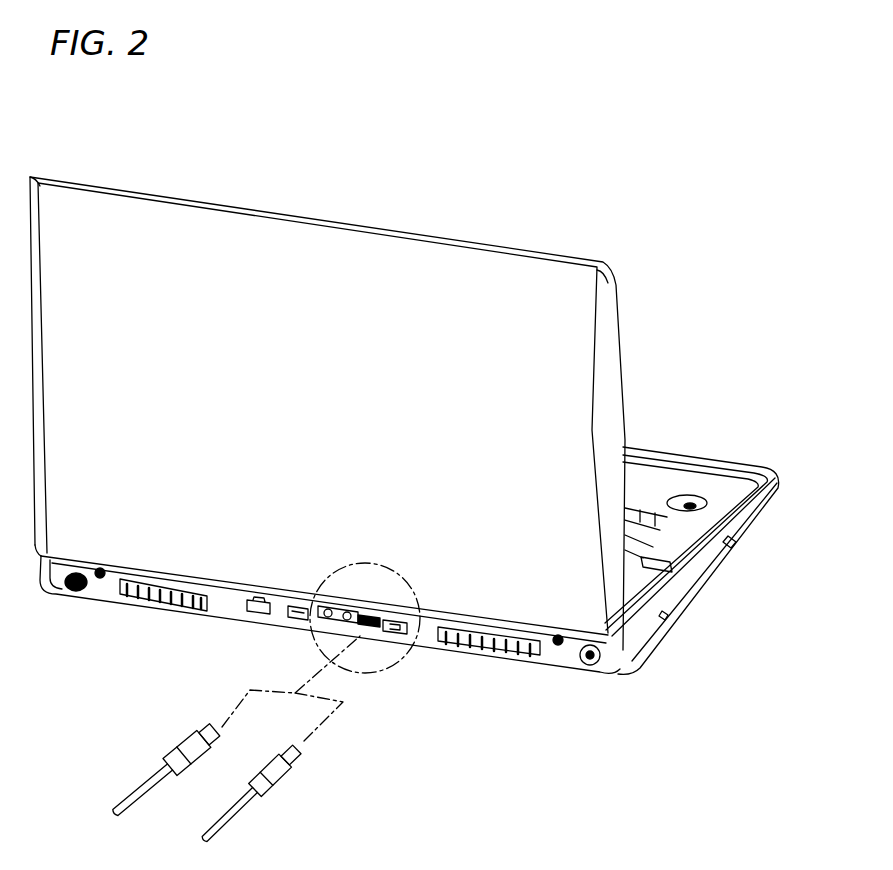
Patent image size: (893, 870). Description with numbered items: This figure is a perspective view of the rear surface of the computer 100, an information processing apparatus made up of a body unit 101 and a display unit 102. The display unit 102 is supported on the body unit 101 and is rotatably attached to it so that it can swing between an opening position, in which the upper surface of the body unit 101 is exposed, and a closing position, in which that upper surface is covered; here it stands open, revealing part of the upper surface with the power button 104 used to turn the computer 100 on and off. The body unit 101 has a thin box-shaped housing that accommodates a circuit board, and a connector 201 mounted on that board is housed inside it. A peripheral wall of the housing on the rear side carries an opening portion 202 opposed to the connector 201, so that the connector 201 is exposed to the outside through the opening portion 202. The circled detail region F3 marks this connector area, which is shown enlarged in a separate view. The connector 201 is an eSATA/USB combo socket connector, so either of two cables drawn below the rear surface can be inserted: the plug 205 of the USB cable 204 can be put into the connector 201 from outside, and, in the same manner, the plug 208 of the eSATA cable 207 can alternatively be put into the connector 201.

The computer 100 is at (664, 184).
The body unit 101 is at (720, 449).
The display unit 102 is at (471, 239).
The power button 104 is at (661, 569).
The connector 201 is at (354, 639).
The opening portion 202 is at (370, 606).
The USB cable 204 is at (250, 812).
The plug 205 is at (301, 749).
The eSATA cable 207 is at (150, 776).
The plug 208 is at (208, 729).
The detail region shown in FIG. 3 F3 is at (405, 662).